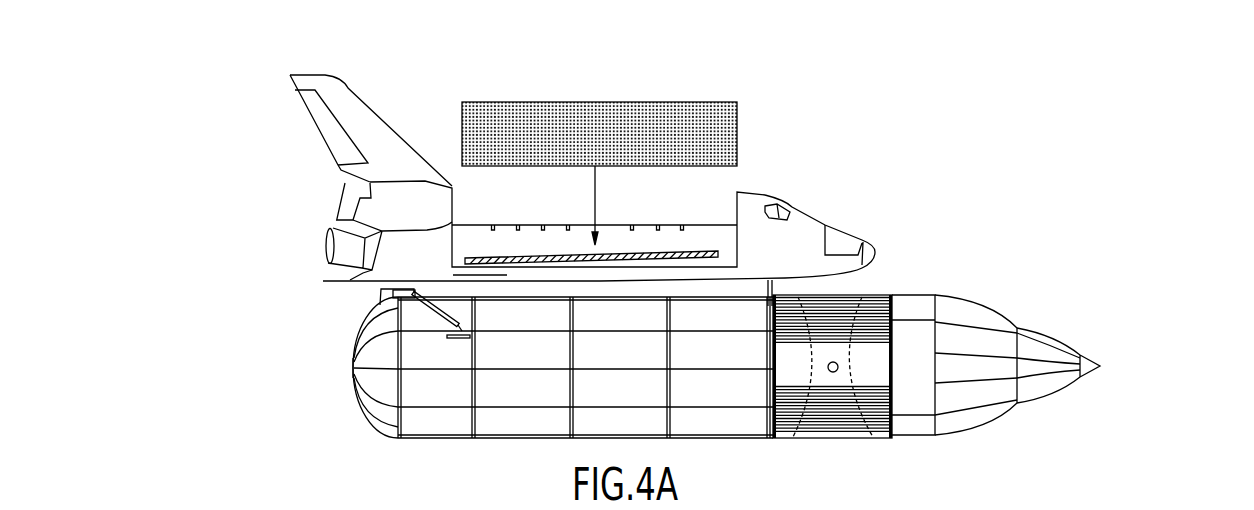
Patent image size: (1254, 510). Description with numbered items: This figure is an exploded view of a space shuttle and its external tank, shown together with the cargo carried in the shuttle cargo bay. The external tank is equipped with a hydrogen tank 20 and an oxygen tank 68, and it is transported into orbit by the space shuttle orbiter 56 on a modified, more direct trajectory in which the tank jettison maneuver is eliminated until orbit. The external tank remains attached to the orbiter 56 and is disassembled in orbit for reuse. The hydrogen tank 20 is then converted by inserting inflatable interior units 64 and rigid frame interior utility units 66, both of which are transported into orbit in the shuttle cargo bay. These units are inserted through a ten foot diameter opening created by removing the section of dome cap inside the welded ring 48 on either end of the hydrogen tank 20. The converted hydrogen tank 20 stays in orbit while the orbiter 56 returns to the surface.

The hydrogen tank 20 is at (676, 351).
The welded ring 48 is at (356, 344).
The space shuttle orbiter 56 is at (795, 237).
The inflatable interior units 64 is at (720, 130).
The rigid frame interior utility units 66 is at (683, 250).
The oxygen tank 68 is at (992, 320).